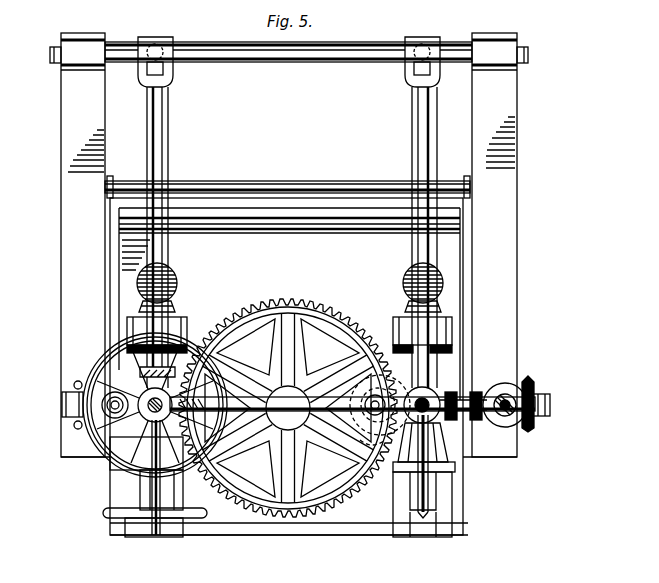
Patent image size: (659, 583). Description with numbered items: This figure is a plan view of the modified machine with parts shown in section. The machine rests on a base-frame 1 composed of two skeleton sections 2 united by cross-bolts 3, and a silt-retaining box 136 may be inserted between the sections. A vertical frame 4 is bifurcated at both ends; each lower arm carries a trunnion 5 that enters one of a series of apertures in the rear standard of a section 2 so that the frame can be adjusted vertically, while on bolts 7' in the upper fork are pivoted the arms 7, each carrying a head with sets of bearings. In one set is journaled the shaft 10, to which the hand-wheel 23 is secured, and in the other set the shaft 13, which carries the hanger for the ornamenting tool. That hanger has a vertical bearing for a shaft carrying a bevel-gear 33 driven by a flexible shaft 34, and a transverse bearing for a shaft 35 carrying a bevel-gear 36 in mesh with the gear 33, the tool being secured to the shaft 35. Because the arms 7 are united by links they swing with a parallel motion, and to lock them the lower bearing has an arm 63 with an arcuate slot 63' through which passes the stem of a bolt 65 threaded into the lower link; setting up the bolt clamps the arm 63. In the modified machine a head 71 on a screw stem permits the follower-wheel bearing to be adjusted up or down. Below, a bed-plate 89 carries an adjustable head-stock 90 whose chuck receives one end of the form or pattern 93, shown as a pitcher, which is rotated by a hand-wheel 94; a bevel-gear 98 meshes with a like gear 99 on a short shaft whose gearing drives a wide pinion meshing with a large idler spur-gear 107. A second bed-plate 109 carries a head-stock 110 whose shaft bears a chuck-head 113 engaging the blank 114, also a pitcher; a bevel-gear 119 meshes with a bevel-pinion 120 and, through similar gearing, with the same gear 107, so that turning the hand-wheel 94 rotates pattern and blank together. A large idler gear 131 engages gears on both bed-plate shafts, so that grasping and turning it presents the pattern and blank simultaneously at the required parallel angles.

The base-frame 1 is at (352, 387).
The skeleton section 2 is at (289, 245).
The cross-bolt 3 is at (275, 183).
The vertical frame 4 is at (275, 62).
The trunnion 5 is at (50, 55).
The arm 7 is at (288, 237).
The bolt 7' is at (289, 63).
The shaft 10 is at (146, 412).
The shaft 13 is at (430, 394).
The hand-wheel 23 is at (190, 335).
The bevel-gear 33 is at (520, 385).
The flexible shaft 34 is at (533, 392).
The shaft 35 is at (552, 405).
The bevel-gear 36 is at (535, 422).
The arm 63 is at (380, 440).
The arcuate slot 63' is at (378, 349).
The bolt 65 is at (367, 400).
The head 71 is at (115, 396).
The bed-plate 89 is at (137, 530).
The head-stock 90 is at (143, 490).
The form or pattern 93 is at (140, 452).
The hand-wheel 94 is at (103, 514).
The bevel-gear 98 is at (177, 299).
The bevel-gear 99 is at (177, 275).
The spur-gear 107 is at (322, 307).
The bed-plate 109 is at (445, 530).
The head-stock 110 is at (432, 488).
The face-plate or chuck-head 113 is at (452, 468).
The blank 114 is at (448, 452).
The bevel-gear 119 is at (441, 303).
The bevel-pinion 120 is at (440, 278).
The gear 131 is at (272, 497).
The silt-retaining box 136 is at (289, 366).